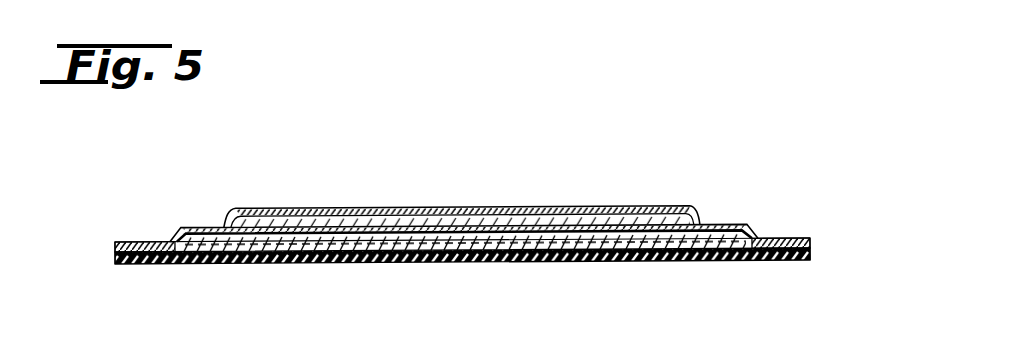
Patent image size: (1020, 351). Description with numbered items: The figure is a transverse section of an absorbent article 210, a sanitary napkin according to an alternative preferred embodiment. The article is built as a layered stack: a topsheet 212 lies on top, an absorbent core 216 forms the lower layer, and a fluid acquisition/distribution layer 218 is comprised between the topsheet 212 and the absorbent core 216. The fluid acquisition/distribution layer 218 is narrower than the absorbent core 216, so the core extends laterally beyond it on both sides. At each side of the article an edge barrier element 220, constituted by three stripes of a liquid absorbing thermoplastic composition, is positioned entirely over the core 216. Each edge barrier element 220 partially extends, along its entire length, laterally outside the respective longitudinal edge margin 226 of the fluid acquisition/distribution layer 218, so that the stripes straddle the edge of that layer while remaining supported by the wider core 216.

The absorbent article 210 is at (503, 208).
The topsheet 212 is at (303, 207).
The absorbent core 216 is at (463, 289).
The fluid acquisition/distribution layer 218 is at (457, 218).
The edge barrier element 220 is at (258, 230).
The longitudinal edge margin 226 is at (225, 222).